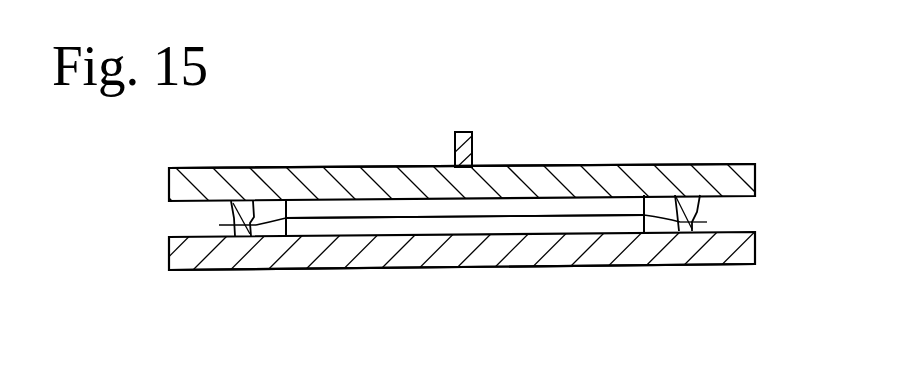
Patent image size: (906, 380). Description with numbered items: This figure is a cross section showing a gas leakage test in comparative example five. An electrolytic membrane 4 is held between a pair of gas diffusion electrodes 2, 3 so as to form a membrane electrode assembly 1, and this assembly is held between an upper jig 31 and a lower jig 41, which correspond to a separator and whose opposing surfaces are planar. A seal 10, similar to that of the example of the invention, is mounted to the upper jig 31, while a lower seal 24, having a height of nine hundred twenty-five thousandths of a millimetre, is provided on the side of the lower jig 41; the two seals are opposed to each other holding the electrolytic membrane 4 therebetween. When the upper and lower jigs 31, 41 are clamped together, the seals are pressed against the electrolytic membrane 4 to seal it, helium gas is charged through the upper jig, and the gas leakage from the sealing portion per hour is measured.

The membrane electrode assembly 1 is at (311, 195).
The gas diffusion electrode 2 is at (363, 208).
The gas diffusion electrode 3 is at (337, 227).
The electrolytic membrane 4 is at (428, 218).
The seal 10 is at (700, 214).
The lower seal 24 is at (702, 232).
The upper jig 31 is at (537, 165).
The lower jig 41 is at (507, 265).